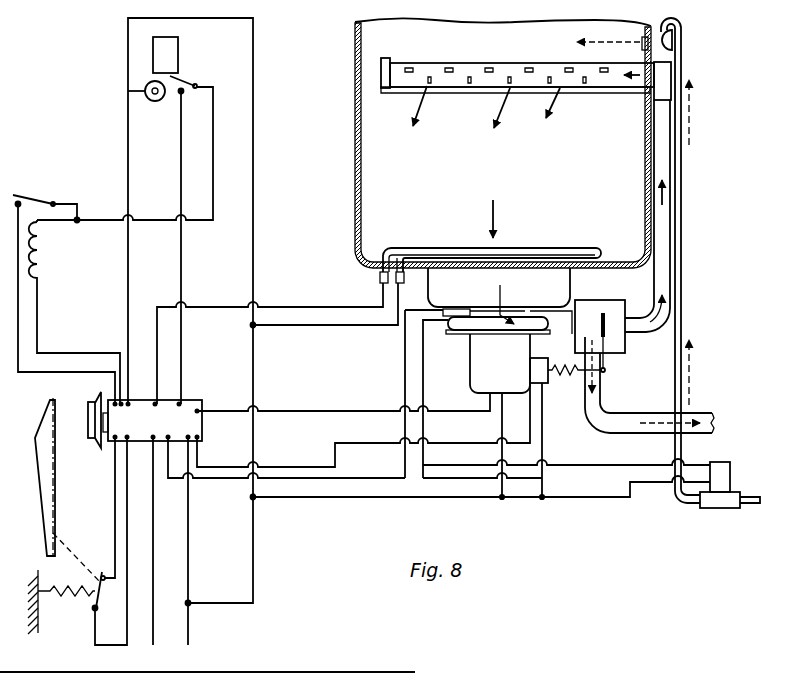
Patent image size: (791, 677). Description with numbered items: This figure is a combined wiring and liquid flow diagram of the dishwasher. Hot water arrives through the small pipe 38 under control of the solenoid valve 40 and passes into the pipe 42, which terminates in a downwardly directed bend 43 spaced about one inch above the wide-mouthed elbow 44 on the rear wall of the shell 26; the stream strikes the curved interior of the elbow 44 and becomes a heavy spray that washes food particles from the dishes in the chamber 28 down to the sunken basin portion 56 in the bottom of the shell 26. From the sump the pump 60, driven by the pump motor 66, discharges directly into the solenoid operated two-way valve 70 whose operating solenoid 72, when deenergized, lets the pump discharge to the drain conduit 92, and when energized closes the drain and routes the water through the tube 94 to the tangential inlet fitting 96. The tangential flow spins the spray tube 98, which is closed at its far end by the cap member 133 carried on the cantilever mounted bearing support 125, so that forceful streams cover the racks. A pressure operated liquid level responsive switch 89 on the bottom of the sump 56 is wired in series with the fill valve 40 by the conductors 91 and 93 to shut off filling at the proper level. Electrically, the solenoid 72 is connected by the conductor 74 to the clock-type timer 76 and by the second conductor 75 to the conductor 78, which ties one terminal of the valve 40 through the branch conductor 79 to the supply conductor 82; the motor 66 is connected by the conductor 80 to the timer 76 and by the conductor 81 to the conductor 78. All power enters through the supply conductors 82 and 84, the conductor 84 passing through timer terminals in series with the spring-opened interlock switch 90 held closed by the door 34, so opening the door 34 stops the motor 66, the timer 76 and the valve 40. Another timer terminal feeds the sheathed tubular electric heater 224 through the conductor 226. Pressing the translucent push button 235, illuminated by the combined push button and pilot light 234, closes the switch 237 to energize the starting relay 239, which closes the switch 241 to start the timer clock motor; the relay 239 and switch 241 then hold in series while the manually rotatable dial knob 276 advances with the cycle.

The shell 26 is at (355, 190).
The chamber 28 is at (495, 196).
The spray tube 98 is at (422, 66).
The cap member 133 is at (380, 80).
The cantilever mounted bearing support 125 is at (483, 92).
The tangential inlet fitting 96 is at (670, 68).
The tube 94 is at (670, 167).
The pipe 42 is at (681, 274).
The 180° bend 43 is at (683, 23).
The wide-mouthed elbow 44 is at (672, 40).
The electric heater 224 is at (577, 248).
The conductor 226 is at (320, 307).
The sunken basin portion 56 is at (553, 294).
The pressure operated liquid level responsive switch 89 is at (452, 308).
The pump 60 is at (477, 330).
The pump motor 66 is at (490, 365).
The operating solenoid 72 is at (547, 376).
The solenoid operated two-way valve 70 is at (632, 342).
The drain conduit 92 is at (623, 418).
The solenoid valve 40 is at (710, 505).
The small pipe 38 is at (755, 497).
The conductor 91 is at (405, 365).
The conductor 93 is at (423, 428).
The conductor 81 is at (502, 478).
The second conductor 75 is at (545, 452).
The conductor 78 is at (587, 500).
The conductor 80 is at (300, 410).
The conductor 74 is at (307, 470).
The branch conductor 79 is at (254, 565).
The supply conductor 82 is at (189, 625).
The supply conductor 84 is at (154, 640).
The interlock switch 90 is at (92, 598).
The door 34 is at (40, 498).
The dial knob 276 is at (86, 416).
The clock-type timer 76 is at (188, 406).
The starting relay 239 is at (40, 272).
The switch 241 is at (18, 196).
The switch 237 is at (182, 78).
The combined push button and pilot light 234 is at (154, 101).
The translucent push button 235 is at (172, 48).